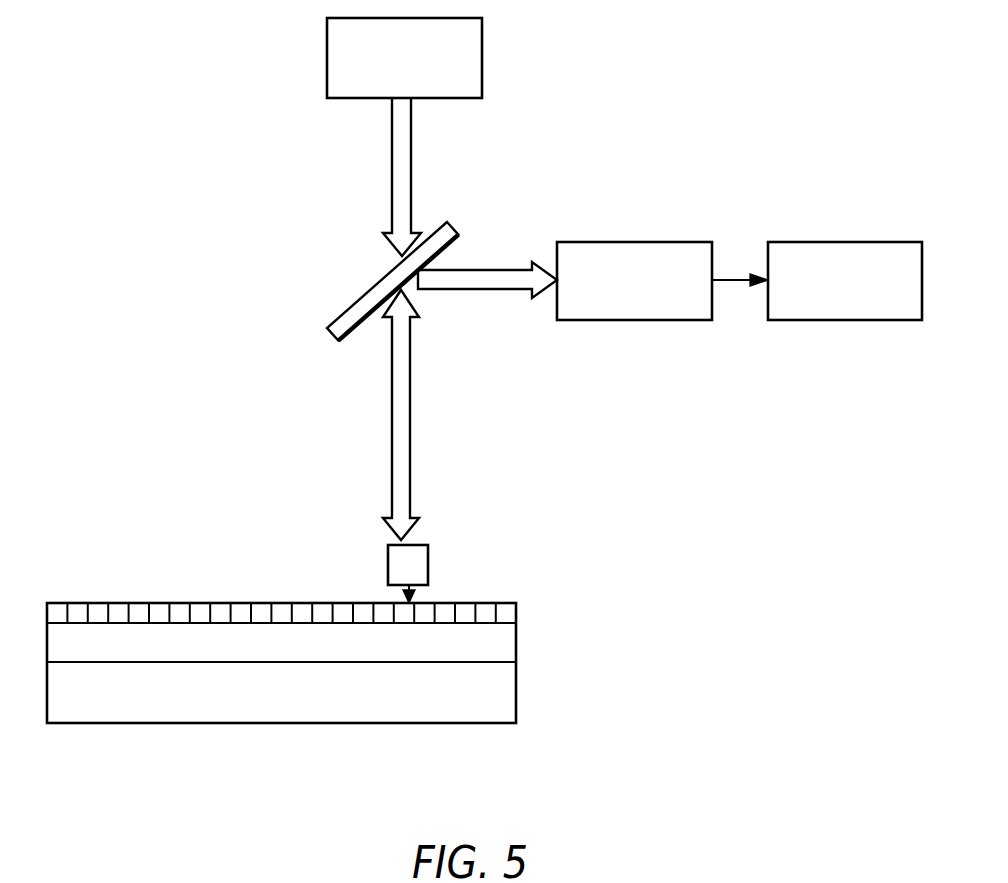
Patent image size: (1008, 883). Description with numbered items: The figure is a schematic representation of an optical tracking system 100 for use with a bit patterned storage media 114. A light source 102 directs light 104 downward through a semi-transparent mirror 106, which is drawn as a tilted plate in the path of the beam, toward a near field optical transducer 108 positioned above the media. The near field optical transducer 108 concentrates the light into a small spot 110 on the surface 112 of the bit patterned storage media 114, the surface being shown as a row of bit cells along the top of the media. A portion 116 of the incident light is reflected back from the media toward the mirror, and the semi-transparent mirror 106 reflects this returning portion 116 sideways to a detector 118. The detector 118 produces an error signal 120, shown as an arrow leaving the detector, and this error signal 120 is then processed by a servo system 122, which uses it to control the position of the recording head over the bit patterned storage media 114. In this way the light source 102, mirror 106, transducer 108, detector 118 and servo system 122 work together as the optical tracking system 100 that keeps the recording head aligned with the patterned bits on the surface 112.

The optical tracking system 100 is at (653, 465).
The light source 102 is at (483, 62).
The light 104 is at (412, 156).
The semi-transparent mirror 106 is at (361, 307).
The near field optical transducer 108 is at (425, 563).
The small spot 110 is at (408, 605).
The surface 112 is at (262, 602).
The bit patterned storage media 114 is at (115, 740).
The portion of incident light 116 is at (485, 290).
The detector 118 is at (640, 320).
The error signal 120 is at (732, 278).
The servo system 122 is at (847, 322).